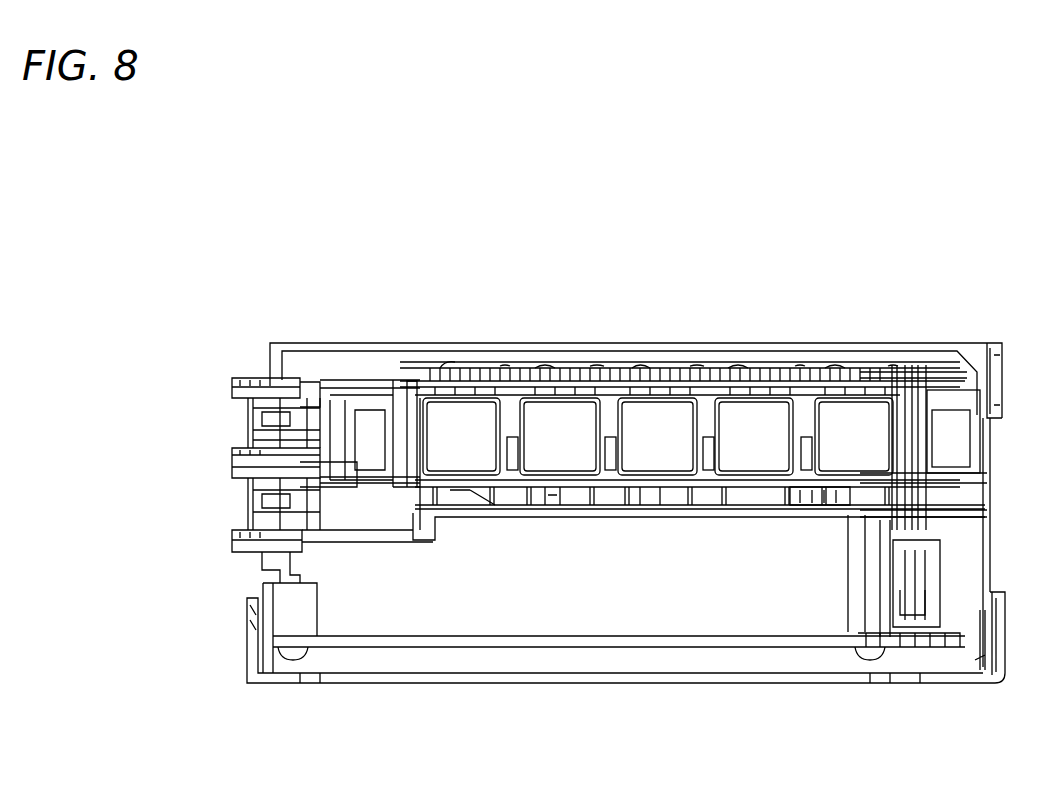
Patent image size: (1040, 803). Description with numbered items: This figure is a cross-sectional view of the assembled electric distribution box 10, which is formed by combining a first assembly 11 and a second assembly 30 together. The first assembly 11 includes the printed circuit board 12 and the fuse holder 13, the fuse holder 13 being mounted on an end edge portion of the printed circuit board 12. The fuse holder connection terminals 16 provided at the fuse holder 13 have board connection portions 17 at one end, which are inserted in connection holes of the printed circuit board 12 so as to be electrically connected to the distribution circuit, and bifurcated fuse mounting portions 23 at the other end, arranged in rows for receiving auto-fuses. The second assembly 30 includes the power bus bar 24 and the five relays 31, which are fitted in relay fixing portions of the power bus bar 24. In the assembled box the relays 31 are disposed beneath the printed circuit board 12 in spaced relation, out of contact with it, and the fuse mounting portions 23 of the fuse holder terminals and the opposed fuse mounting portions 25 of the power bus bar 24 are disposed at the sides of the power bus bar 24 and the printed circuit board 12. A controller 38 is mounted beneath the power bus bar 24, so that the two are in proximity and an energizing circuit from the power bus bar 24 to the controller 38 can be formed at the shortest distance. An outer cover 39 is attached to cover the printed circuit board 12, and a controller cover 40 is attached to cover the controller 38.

The electric distribution box 10 is at (799, 212).
The first assembly 11 is at (935, 365).
The printed circuit board 12 is at (731, 365).
The fuse holder 13 is at (262, 373).
The fuse holder connection terminals 16 is at (309, 395).
The board connection portions 17 is at (396, 355).
The fuse mounting portions 23 is at (232, 462).
The power bus bar 24 is at (567, 485).
The fuse mounting portions 25 is at (237, 548).
The second assembly 30 is at (651, 488).
The relays 31 is at (508, 365).
The controller 38 is at (750, 623).
The outer cover 39 is at (963, 347).
The controller cover 40 is at (950, 683).